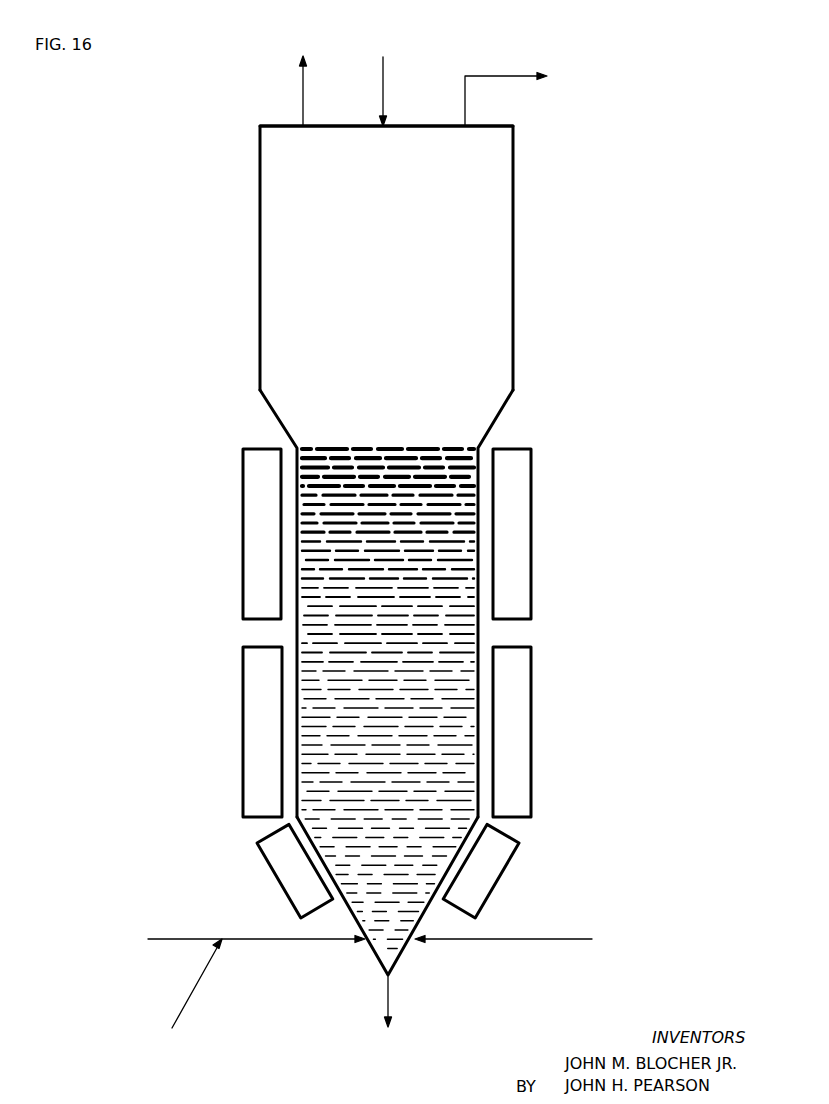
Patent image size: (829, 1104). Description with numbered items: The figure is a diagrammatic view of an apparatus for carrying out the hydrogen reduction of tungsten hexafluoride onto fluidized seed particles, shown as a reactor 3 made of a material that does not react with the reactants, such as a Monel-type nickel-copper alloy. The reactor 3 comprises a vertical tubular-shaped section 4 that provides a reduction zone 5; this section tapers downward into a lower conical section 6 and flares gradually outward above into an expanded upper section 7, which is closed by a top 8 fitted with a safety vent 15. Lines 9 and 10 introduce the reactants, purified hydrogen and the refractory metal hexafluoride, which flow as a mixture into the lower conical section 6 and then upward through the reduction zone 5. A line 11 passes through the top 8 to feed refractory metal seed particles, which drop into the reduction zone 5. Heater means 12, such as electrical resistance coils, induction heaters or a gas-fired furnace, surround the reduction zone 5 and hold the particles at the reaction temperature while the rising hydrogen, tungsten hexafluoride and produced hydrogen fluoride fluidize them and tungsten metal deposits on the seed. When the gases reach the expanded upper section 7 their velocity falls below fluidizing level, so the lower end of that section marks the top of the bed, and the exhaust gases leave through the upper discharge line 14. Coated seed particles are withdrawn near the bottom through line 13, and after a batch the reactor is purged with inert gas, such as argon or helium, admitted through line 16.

The reactor 3 is at (419, 523).
The vertical tubular-shaped section 4 is at (297, 630).
The reduction zone 5 is at (307, 568).
The lower conical section 6 is at (352, 909).
The upper section 7 is at (260, 262).
The top 8 is at (337, 126).
The line 9 is at (190, 939).
The line 10 is at (197, 982).
The line 11 is at (384, 92).
The heater means 12 is at (527, 845).
The line 13 is at (389, 1016).
The upper discharge line 14 is at (487, 76).
The safety vent 15 is at (303, 104).
The line 16 is at (517, 939).